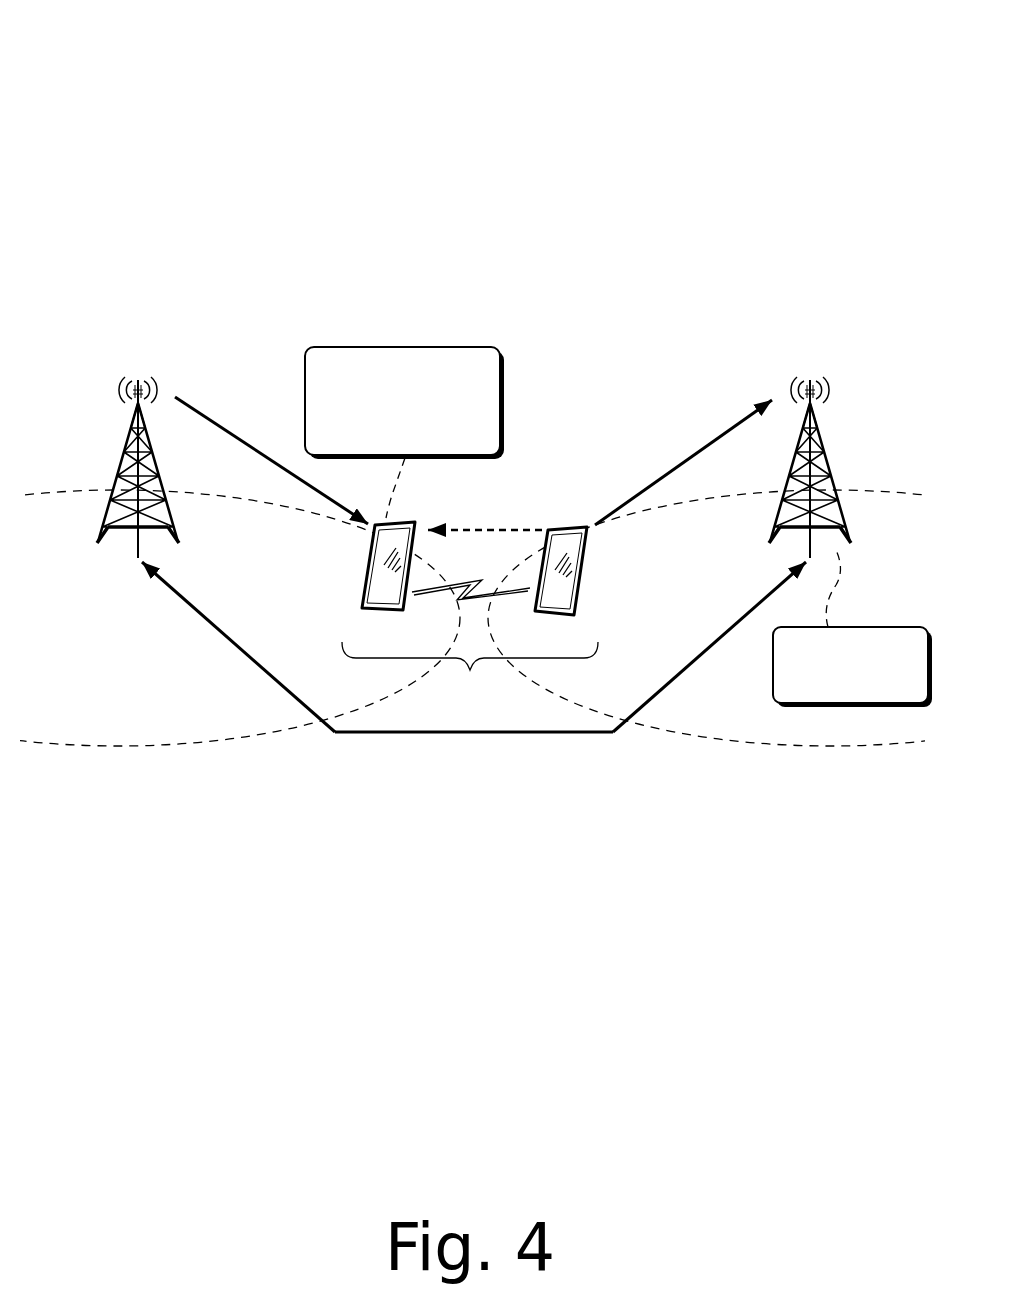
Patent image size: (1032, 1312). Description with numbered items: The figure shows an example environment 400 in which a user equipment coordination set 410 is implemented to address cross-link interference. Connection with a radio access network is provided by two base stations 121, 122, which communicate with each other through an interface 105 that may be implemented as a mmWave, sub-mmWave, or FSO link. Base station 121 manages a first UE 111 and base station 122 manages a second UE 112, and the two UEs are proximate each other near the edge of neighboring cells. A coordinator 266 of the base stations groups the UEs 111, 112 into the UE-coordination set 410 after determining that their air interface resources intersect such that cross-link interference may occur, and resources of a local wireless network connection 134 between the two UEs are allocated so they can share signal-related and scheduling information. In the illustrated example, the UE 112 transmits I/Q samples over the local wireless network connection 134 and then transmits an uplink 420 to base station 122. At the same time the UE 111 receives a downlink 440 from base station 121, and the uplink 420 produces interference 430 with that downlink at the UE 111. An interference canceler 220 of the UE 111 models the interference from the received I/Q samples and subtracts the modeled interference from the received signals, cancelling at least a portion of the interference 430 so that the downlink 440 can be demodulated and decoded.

The example environment 400 is at (200, 44).
The Xn interface 105 is at (470, 740).
The base station 121 is at (128, 437).
The base station 122 is at (820, 437).
The interference canceler 220 is at (404, 432).
The coordinator 266 is at (852, 628).
The downlink 440 is at (282, 466).
The uplink 420 is at (702, 452).
The interference 430 is at (508, 528).
The user equipment 111 is at (370, 583).
The user equipment 112 is at (583, 590).
The local wireless network connection 134 is at (452, 590).
The user equipment coordination set 410 is at (470, 671).